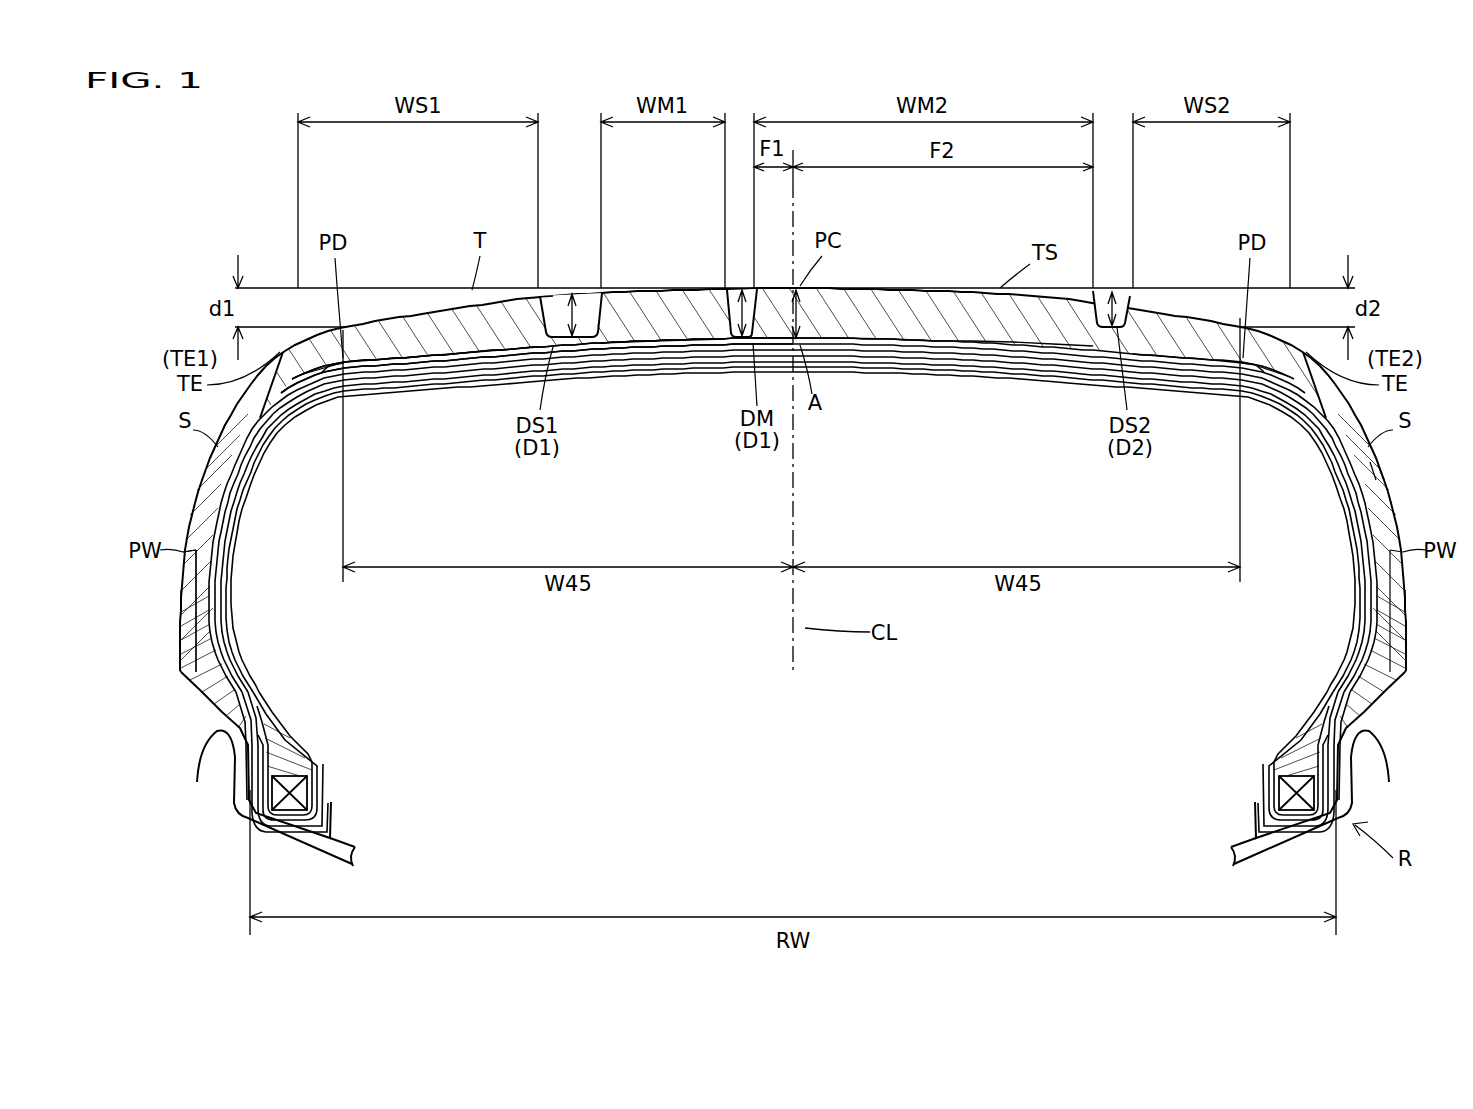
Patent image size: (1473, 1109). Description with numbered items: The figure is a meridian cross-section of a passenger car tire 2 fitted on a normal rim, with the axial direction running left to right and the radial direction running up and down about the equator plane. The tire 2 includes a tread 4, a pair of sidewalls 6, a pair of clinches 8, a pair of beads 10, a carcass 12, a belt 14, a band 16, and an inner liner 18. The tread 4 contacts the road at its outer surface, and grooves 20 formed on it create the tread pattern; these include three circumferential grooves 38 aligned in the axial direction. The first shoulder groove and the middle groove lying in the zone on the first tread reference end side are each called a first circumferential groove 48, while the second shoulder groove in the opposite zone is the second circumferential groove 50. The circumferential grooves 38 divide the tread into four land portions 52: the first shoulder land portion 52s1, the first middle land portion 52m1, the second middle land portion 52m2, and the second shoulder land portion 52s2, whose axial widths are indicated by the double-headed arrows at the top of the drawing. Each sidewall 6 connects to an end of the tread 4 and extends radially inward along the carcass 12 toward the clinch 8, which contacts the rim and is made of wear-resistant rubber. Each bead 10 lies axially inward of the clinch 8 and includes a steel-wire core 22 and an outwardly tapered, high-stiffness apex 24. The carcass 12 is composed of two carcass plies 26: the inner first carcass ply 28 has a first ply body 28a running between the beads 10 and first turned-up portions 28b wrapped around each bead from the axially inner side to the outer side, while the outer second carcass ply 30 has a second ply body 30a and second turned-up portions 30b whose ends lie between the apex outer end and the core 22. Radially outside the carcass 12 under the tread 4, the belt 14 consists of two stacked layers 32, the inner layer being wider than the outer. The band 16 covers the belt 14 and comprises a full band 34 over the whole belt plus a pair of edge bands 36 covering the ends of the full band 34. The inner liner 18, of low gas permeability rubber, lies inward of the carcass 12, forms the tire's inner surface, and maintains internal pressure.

The tire 2 is at (1345, 192).
The tread 4 is at (901, 284).
The sidewall 6 is at (195, 490).
The clinch 8 is at (213, 688).
The bead 10 is at (793, 762).
The carcass 12 is at (997, 370).
The belt 14 is at (836, 466).
The band 16 is at (645, 336).
The inner liner 18 is at (1187, 394).
The groove 20 is at (552, 300).
The core 22 is at (303, 793).
The apex 24 is at (297, 757).
The carcass ply 26 is at (418, 378).
The first carcass ply 28 is at (792, 567).
The first ply body 28a is at (1370, 462).
The first turned-up portion 28b is at (181, 596).
The second carcass ply 30 is at (806, 617).
The second ply body 30a is at (1378, 465).
The second turned-up portion 30b is at (248, 742).
The layer 32 is at (858, 357).
The full band 34 is at (868, 350).
The edge band 36 is at (376, 357).
The circumferential groove 38 is at (835, 393).
The first circumferential groove 48 is at (590, 338).
The second circumferential groove 50 is at (1105, 332).
The land portion 52 is at (791, 282).
The first shoulder land portion 52s1 is at (410, 350).
The first middle land portion 52m1 is at (705, 345).
The second middle land portion 52m2 is at (940, 345).
The second shoulder land portion 52s2 is at (1172, 350).